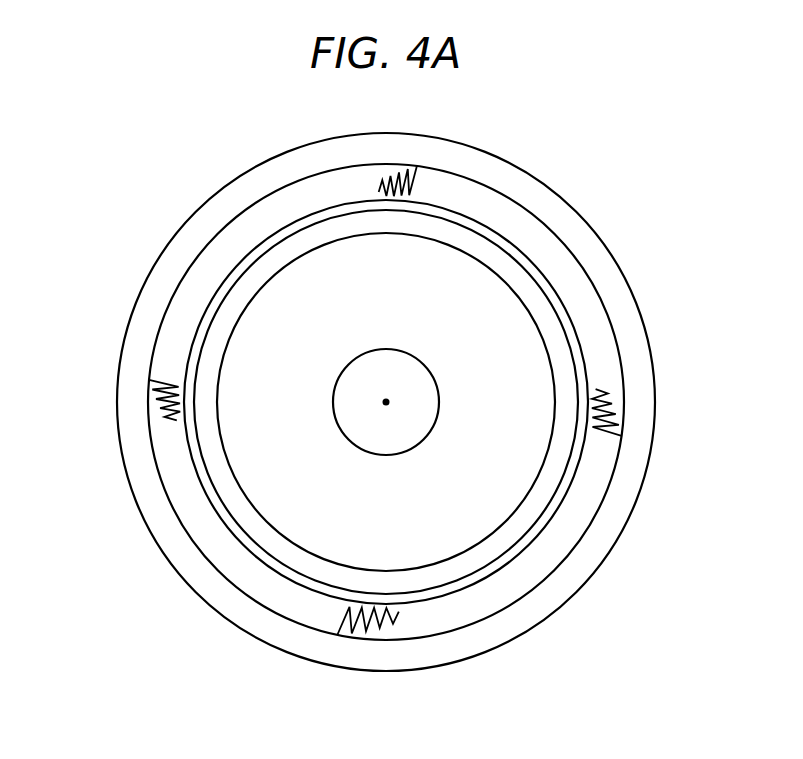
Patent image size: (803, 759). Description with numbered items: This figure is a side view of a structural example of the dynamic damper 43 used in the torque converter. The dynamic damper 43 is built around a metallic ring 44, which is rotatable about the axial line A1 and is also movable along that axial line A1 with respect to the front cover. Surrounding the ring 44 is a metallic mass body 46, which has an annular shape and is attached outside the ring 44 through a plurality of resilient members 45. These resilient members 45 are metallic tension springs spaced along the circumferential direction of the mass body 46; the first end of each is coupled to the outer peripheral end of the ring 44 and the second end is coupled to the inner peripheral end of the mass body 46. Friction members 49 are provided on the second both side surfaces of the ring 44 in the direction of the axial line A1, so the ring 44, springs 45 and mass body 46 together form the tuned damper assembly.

The dynamic damper 43 is at (115, 260).
The ring 44 is at (477, 292).
The resilient members 45 is at (385, 187).
The mass body 46 is at (585, 240).
The friction members 49 is at (547, 479).
The axial line A1 is at (386, 401).